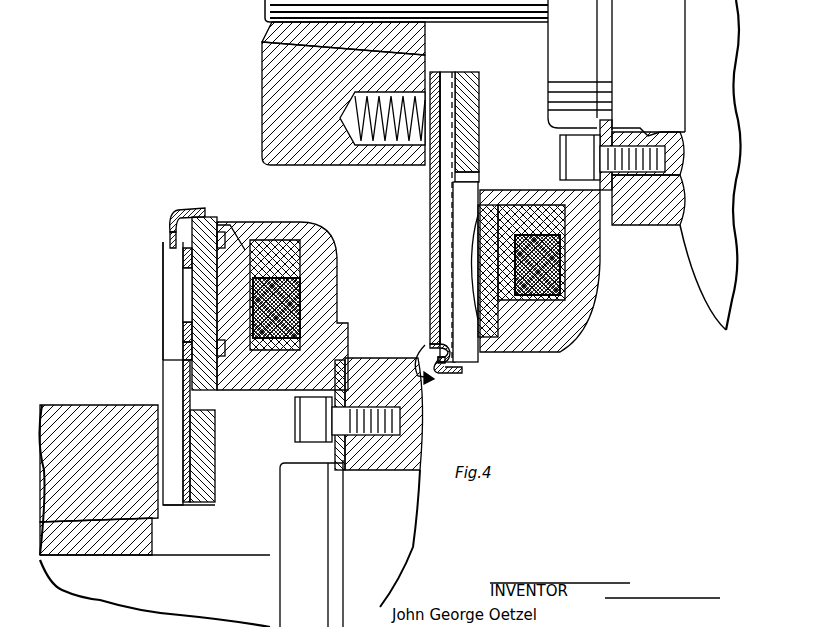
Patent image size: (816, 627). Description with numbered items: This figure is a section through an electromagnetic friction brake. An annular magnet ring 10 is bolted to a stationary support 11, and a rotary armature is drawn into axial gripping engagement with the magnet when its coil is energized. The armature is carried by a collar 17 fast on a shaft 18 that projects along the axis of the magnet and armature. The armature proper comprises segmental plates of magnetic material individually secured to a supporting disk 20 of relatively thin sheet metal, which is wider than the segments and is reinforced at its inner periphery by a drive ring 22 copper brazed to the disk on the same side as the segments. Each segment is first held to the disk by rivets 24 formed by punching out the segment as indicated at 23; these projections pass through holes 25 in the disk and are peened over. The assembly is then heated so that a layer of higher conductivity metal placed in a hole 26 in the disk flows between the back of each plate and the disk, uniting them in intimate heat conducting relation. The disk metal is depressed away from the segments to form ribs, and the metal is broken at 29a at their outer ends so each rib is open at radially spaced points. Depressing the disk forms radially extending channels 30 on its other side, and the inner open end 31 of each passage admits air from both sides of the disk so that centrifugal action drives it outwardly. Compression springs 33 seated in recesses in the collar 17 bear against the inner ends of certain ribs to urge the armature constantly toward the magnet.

The magnet ring 10 is at (337, 292).
The stationary support 11 is at (378, 365).
The collar 17 is at (62, 412).
The shaft 18 is at (92, 598).
The supporting disk 20 is at (215, 478).
The drive ring 22 is at (215, 504).
The punched-out portion of segment 23 is at (238, 230).
The rivets 24 is at (183, 255).
The holes 25 is at (183, 358).
The hole 26 is at (185, 295).
The break in disk metal 29a is at (438, 345).
The channels 30 is at (440, 250).
The inner open end 31 is at (436, 62).
The compression springs 33 is at (383, 145).